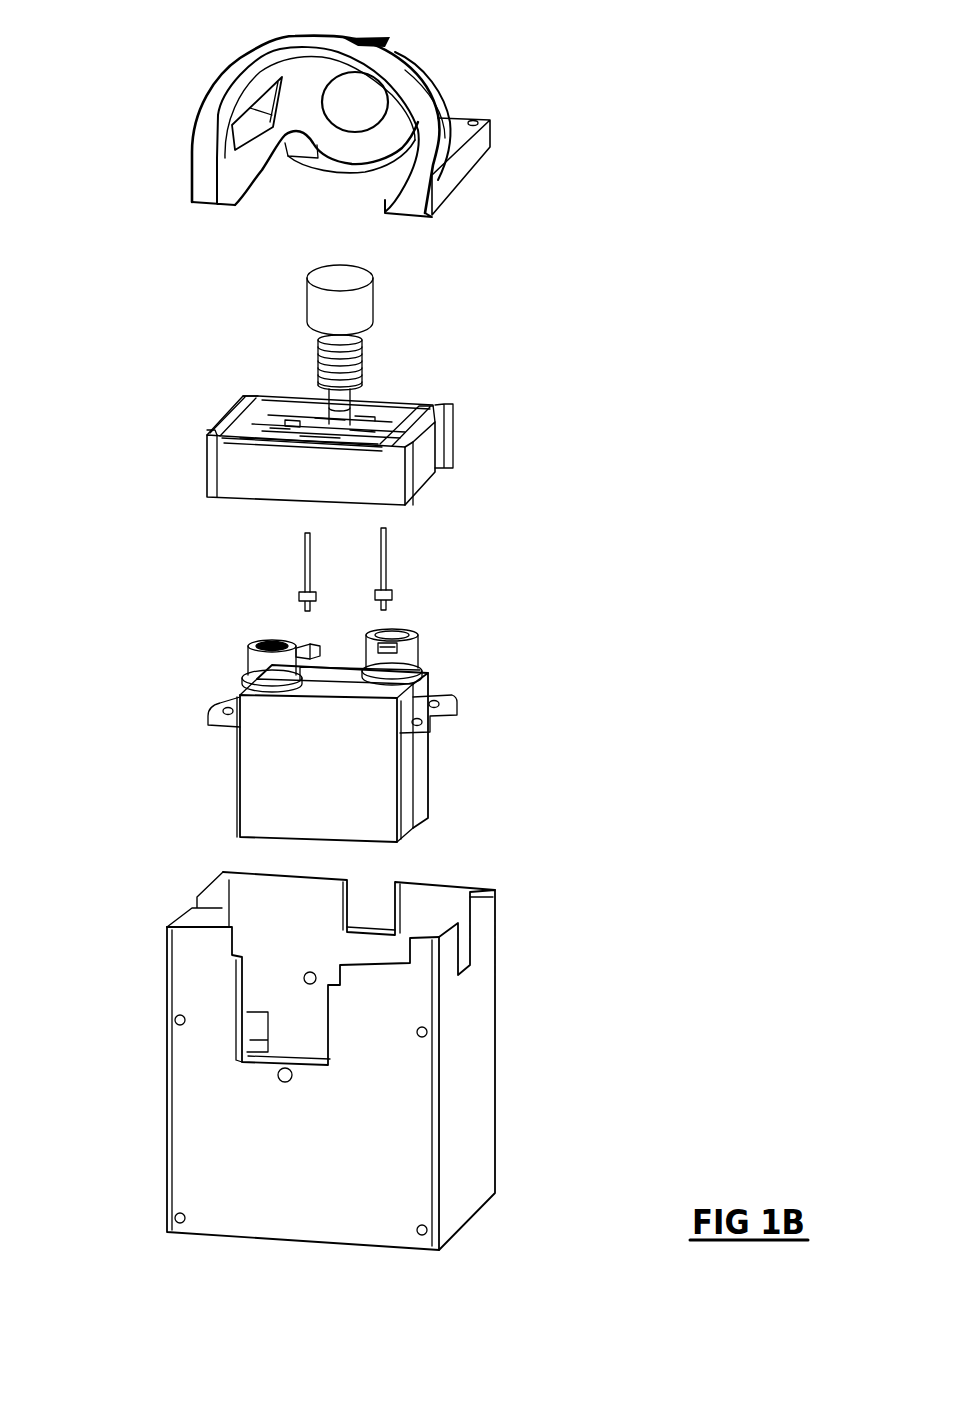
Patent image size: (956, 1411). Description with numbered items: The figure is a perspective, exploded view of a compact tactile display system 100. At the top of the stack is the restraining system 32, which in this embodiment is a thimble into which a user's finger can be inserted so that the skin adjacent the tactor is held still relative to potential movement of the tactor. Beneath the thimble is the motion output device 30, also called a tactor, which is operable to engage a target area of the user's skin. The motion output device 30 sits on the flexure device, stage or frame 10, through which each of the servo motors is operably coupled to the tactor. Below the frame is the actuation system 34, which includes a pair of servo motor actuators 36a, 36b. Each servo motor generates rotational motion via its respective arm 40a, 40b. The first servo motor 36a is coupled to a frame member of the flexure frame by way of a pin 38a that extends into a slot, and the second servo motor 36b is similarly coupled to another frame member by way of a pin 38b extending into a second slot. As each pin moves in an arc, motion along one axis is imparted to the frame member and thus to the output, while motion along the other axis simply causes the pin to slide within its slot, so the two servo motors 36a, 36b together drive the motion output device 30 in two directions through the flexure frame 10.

The tactile display system 100 is at (127, 301).
The restraining system 32 is at (403, 67).
The motion output device 30 is at (377, 293).
The flexure device, stage or frame 10 is at (228, 462).
The pin 38a is at (298, 545).
The pin 38b is at (388, 540).
The arm 40a is at (315, 647).
The arm 40b is at (395, 647).
The actuation system 34 is at (461, 686).
The servo motor actuator 36a is at (405, 805).
The servo motor actuator 36b is at (423, 753).